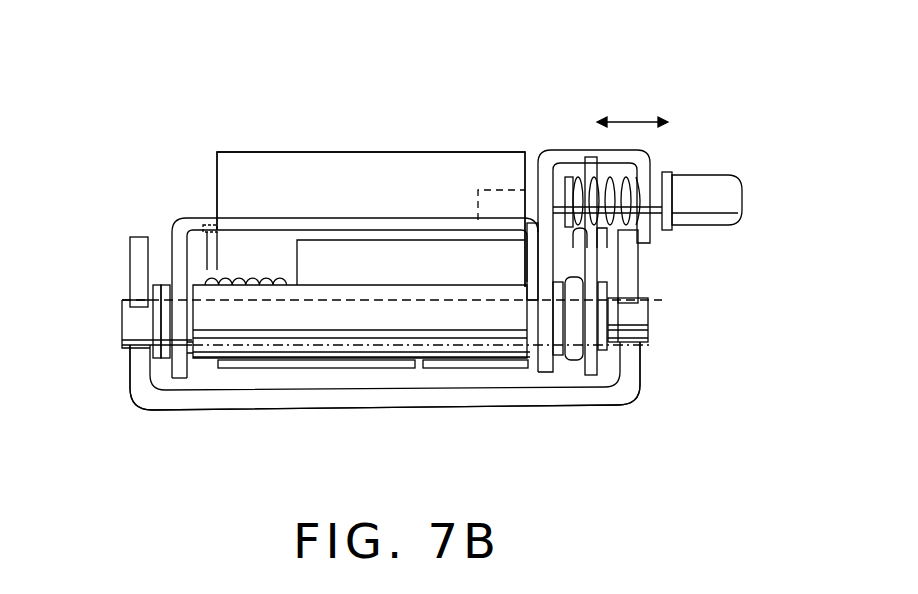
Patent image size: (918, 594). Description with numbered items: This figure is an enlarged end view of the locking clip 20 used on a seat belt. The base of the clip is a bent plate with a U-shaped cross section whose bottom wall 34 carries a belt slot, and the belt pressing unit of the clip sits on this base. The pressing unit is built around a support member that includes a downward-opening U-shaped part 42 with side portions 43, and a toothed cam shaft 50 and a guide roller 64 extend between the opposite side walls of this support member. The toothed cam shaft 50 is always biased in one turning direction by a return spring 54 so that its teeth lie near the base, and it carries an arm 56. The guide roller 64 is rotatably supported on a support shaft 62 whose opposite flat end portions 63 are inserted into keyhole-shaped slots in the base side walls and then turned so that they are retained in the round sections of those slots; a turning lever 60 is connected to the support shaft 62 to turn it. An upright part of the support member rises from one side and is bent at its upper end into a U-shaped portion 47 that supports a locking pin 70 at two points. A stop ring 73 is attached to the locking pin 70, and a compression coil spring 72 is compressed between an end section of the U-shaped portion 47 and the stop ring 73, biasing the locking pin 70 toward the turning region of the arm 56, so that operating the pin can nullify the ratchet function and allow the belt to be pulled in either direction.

The locking clip 20 is at (422, 47).
The bottom wall 34 is at (260, 407).
The U-shaped part 42 is at (452, 165).
The side portions 43 is at (177, 377).
The U-shaped portion 47 is at (648, 243).
The toothed cam shaft 50 is at (358, 252).
The return spring 54 is at (237, 272).
The arm 56 is at (334, 160).
The turning lever 60 is at (598, 368).
The support shaft 62 is at (357, 340).
The flat end portions 63 is at (128, 322).
The guide roller 64 is at (420, 348).
The locking pin 70 is at (745, 220).
The compression coil spring 72 is at (633, 172).
The stop ring 73 is at (557, 150).